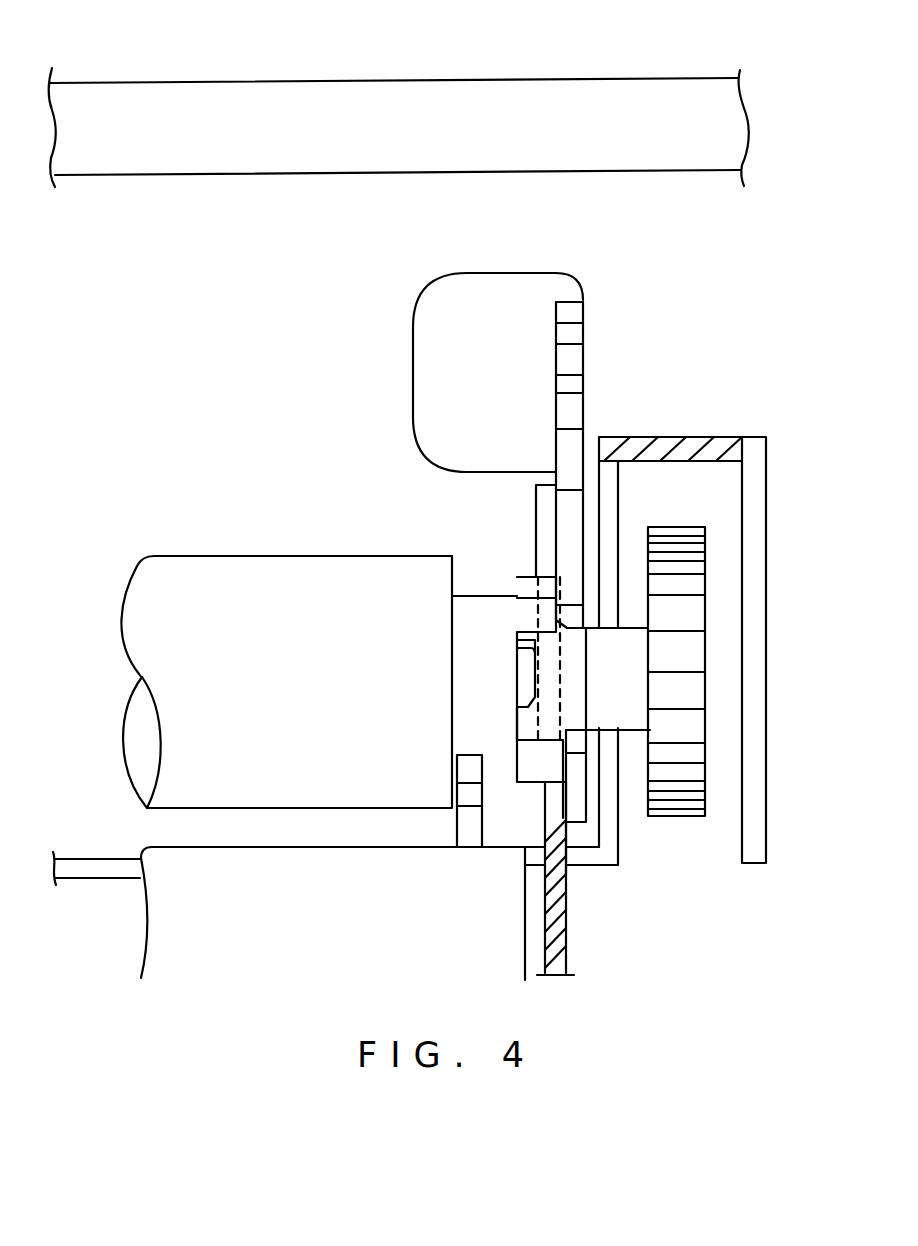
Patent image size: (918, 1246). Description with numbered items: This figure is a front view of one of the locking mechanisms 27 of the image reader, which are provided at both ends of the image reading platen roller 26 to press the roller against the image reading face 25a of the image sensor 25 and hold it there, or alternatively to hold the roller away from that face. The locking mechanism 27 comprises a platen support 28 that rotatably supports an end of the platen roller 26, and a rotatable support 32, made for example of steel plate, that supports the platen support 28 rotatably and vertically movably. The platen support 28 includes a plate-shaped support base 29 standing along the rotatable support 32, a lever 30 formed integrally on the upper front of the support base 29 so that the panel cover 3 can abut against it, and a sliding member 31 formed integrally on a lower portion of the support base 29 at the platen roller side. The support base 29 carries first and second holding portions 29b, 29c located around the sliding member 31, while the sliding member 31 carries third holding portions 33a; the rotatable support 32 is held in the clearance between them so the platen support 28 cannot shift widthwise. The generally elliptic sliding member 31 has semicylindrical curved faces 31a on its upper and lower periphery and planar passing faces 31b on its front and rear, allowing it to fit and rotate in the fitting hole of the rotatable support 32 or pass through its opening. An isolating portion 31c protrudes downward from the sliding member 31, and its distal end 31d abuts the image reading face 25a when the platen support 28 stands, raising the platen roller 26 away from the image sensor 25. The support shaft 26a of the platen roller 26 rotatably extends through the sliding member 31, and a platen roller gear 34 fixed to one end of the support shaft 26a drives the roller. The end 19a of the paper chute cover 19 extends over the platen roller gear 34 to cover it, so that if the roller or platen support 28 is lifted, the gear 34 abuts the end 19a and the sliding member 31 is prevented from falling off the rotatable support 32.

The panel cover 3 is at (549, 97).
The paper chute cover 19 is at (88, 865).
The end of paper chute cover 19a is at (708, 443).
The image sensor 25 is at (152, 892).
The image reading face 25a is at (302, 848).
The image reading platen roller 26 is at (190, 570).
The support shaft 26a is at (634, 695).
The locking mechanism 27 is at (703, 584).
The platen support 28 is at (501, 495).
The support base 29 is at (572, 412).
The first holding portion 29b is at (570, 563).
The second holding portion 29c is at (580, 802).
The lever 30 is at (437, 337).
The sliding member 31 is at (506, 586).
The curved face 31a is at (521, 615).
The passing face 31b is at (526, 723).
The isolating portion 31c is at (462, 823).
The distal end 31d is at (471, 847).
The rotatable support 32 is at (535, 508).
The third holding portion 33a is at (522, 677).
The platen roller gear 34 is at (694, 613).